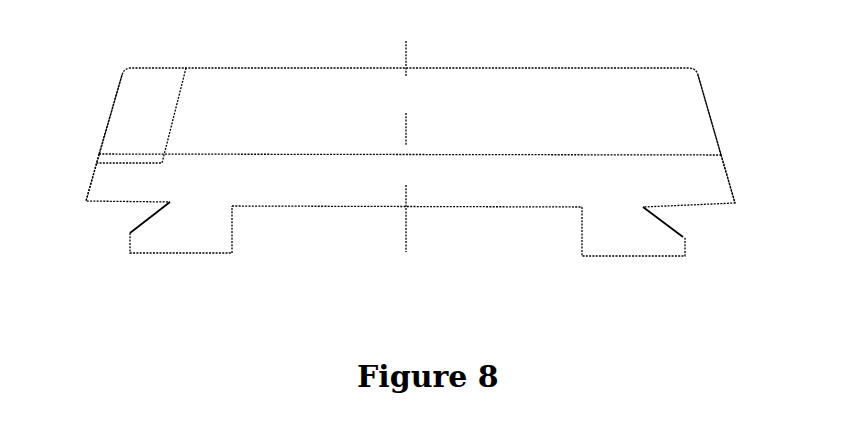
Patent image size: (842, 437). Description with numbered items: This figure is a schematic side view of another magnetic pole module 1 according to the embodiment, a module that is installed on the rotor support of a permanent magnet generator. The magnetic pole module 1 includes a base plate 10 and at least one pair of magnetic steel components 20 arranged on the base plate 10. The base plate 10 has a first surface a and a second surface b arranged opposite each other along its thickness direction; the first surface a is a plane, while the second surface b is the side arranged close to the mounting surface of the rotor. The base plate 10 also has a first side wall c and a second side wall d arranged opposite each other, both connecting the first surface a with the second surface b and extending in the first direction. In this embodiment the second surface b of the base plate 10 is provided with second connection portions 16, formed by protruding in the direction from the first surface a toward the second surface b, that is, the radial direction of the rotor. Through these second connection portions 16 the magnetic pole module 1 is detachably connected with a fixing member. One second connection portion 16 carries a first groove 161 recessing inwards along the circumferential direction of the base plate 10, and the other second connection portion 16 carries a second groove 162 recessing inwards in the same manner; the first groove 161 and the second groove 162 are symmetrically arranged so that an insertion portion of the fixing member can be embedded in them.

The magnetic pole module 1 is at (392, 126).
The base plate 10 is at (388, 197).
The second connection portion 16 is at (220, 230).
The first groove 161 is at (140, 212).
The second groove 162 is at (672, 215).
The magnetic steel component 20 is at (502, 82).
The first surface a is at (537, 155).
The second surface b is at (495, 210).
The first side wall c is at (732, 182).
The second side wall d is at (90, 178).